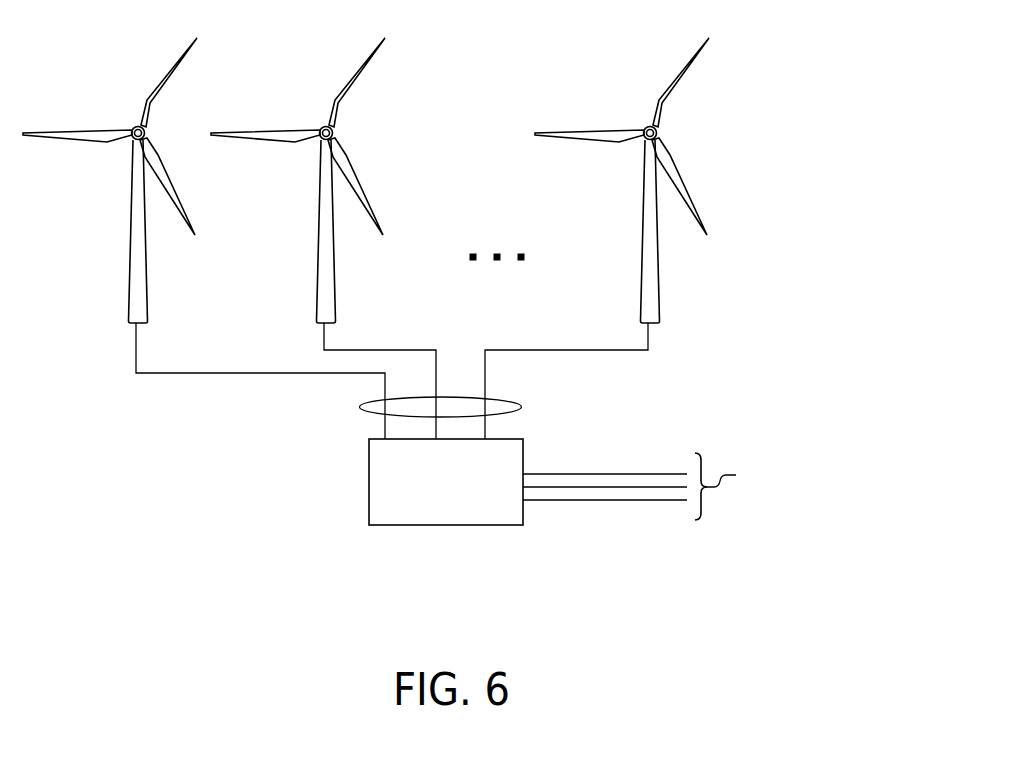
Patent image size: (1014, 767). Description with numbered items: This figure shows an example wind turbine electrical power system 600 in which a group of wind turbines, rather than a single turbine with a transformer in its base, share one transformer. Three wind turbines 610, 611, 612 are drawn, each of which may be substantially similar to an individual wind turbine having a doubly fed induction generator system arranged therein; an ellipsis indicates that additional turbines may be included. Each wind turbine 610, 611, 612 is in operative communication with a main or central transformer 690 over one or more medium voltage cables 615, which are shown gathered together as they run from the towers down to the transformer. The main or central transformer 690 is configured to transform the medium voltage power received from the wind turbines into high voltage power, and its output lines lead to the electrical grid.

The wind turbine electrical power system 600 is at (840, 56).
The wind turbine 610 is at (79, 76).
The wind turbine 611 is at (289, 83).
The wind turbine 612 is at (623, 85).
The medium voltage cable 615 is at (522, 407).
The main or central transformer 690 is at (432, 510).